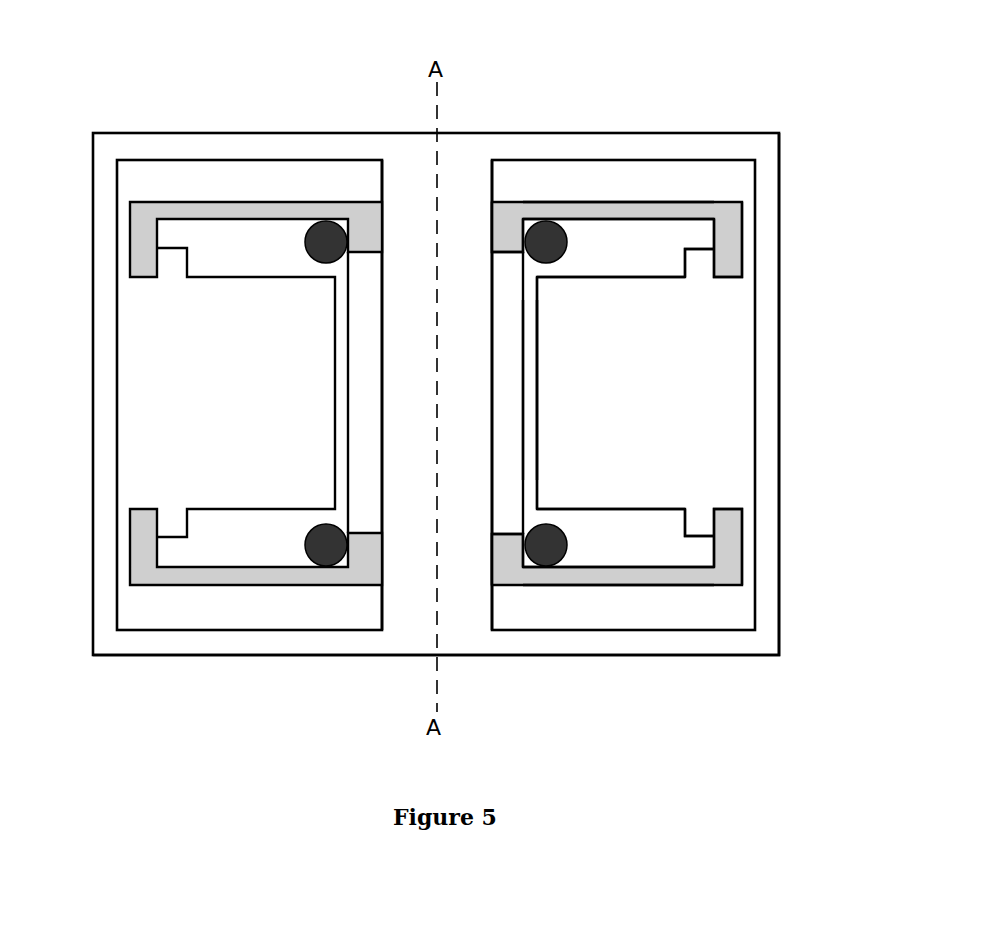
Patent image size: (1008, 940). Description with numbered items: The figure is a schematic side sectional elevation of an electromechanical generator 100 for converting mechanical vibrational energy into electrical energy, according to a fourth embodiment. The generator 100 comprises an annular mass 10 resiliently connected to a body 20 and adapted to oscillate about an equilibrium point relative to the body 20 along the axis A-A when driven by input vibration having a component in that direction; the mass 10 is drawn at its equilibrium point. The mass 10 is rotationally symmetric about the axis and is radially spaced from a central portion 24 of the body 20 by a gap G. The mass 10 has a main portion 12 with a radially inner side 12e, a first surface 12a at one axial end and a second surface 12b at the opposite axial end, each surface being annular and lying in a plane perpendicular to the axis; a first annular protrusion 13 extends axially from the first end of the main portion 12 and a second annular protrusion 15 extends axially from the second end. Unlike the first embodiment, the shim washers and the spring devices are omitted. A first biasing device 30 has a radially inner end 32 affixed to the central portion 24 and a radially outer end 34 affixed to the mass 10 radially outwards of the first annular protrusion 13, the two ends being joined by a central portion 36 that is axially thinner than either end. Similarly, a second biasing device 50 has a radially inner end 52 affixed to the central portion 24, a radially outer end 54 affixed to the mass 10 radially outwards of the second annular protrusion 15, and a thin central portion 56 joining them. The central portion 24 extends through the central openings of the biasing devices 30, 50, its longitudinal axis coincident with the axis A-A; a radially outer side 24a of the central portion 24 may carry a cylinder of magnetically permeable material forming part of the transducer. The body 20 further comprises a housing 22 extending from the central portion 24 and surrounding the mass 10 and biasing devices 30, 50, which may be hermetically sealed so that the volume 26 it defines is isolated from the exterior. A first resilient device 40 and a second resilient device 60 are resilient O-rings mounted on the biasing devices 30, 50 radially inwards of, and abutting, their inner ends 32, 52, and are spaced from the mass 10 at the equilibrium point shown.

The electromechanical generator 100 is at (75, 99).
The annular mass 10 is at (720, 380).
The main portion 12 is at (675, 415).
The first surface 12a is at (250, 277).
The second surface 12b is at (233, 512).
The radially inner side 12e is at (528, 372).
The first annular protrusion 13 is at (702, 265).
The second annular protrusion 15 is at (702, 523).
The body 20 is at (460, 158).
The housing 22 is at (725, 642).
The central portion 24 is at (415, 505).
The radially outer side 24a is at (525, 327).
The volume 26 is at (733, 608).
The first biasing device 30 is at (663, 212).
The radially inner end 32 is at (505, 227).
The radially outer end 34 is at (730, 257).
The central portion 36 is at (628, 212).
The first resilient device 40 is at (565, 228).
The second biasing device 50 is at (640, 578).
The radially inner end 52 is at (508, 560).
The radially outer end 54 is at (730, 527).
The central portion 56 is at (613, 575).
The second resilient device 60 is at (565, 570).
The gap G is at (528, 445).